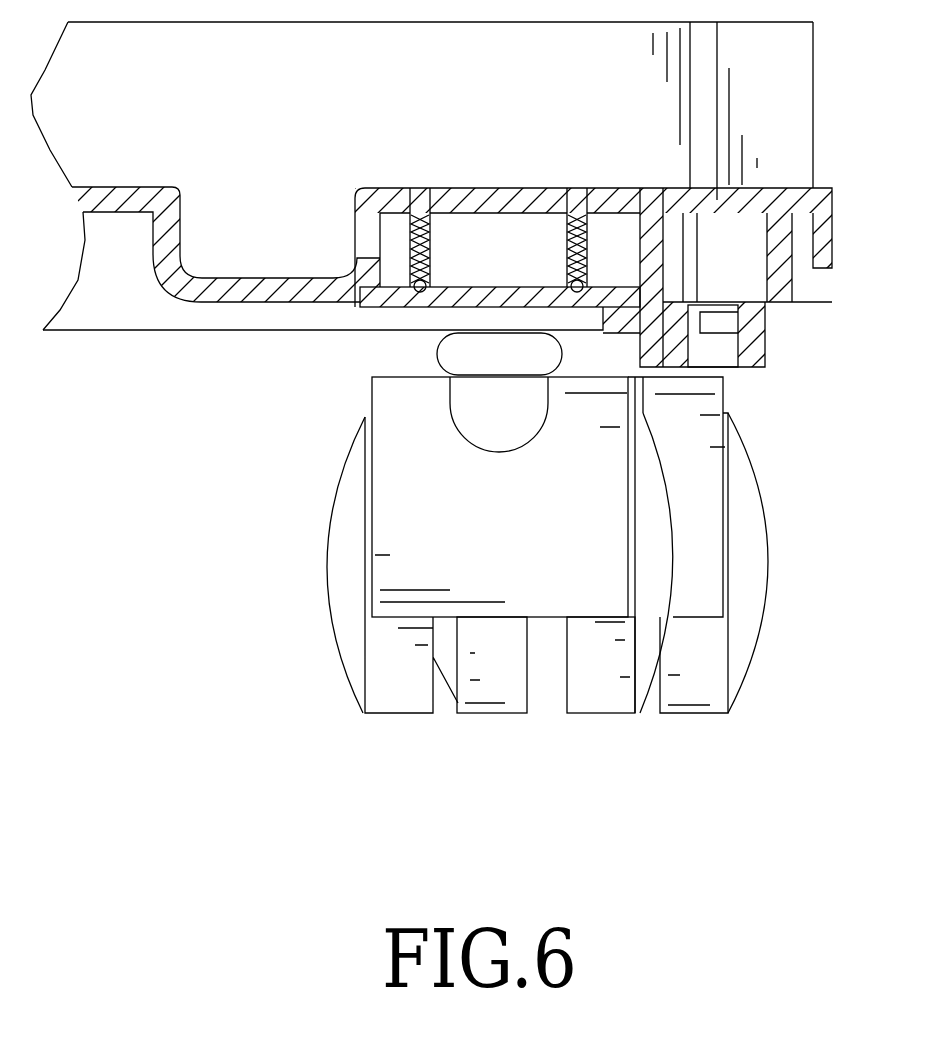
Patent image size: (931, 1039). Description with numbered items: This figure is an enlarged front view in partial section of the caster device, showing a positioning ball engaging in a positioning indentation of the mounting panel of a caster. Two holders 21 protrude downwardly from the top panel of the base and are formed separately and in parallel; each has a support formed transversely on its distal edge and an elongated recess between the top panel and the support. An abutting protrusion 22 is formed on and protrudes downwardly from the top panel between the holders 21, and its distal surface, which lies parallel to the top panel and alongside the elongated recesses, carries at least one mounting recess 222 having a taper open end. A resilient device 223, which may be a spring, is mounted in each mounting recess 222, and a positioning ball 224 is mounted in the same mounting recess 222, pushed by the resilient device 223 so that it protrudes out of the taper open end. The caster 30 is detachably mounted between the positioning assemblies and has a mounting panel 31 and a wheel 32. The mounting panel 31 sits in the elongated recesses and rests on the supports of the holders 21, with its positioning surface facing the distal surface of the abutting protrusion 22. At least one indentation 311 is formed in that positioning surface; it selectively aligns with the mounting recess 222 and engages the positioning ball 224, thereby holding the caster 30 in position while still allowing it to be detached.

The holder 21 is at (365, 258).
The abutting protrusion 22 is at (553, 237).
The mounting recess 222 is at (415, 200).
The resilient device 223 is at (435, 242).
The positioning ball 224 is at (395, 308).
The caster 30 is at (511, 522).
The mounting panel 31 is at (473, 297).
The indentation 311 is at (422, 307).
The wheel 32 is at (657, 582).